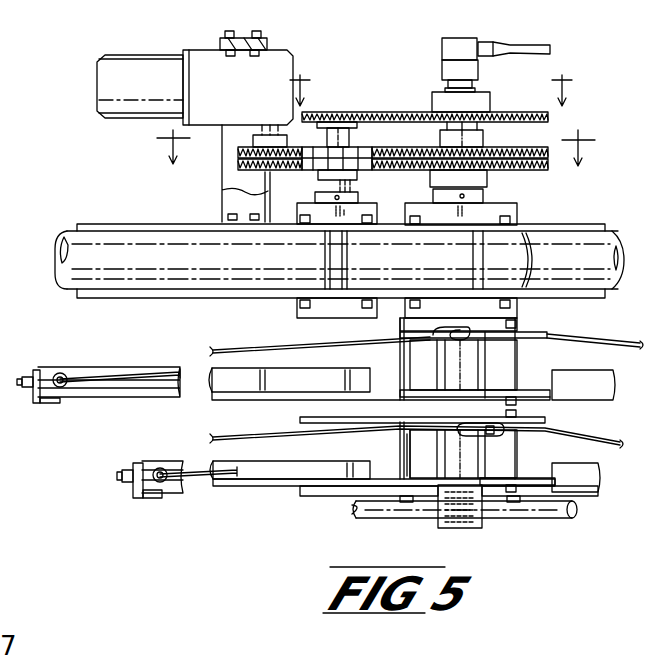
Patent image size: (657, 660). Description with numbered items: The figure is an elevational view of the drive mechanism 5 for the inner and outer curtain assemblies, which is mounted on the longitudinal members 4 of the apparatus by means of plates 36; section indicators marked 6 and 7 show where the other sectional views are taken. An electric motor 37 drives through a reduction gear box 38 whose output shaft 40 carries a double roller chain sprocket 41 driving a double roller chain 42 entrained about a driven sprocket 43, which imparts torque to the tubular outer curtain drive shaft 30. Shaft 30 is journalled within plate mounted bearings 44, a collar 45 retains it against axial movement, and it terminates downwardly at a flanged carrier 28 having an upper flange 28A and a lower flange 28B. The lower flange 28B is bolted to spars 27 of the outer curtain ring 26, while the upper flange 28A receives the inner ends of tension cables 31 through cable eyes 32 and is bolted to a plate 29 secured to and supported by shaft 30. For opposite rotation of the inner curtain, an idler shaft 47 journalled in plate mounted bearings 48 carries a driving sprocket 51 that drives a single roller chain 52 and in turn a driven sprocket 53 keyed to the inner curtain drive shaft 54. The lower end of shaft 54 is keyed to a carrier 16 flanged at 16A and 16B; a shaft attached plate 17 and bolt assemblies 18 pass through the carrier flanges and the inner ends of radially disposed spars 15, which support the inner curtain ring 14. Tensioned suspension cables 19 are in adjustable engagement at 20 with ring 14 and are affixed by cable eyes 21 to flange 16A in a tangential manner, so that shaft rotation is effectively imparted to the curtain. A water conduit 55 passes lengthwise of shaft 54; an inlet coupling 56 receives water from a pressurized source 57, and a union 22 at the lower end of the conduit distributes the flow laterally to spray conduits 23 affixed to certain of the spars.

The longitudinal members 4 is at (70, 269).
The drive mechanism 5 is at (373, 66).
The section line 6- 6 is at (431, 80).
The section line 7- 7 is at (374, 143).
The curtain ring 14 is at (145, 498).
The spars 15 is at (195, 490).
The carrier 16 is at (458, 451).
The carrier flange 16A is at (545, 422).
The carrier flange 16B is at (540, 480).
The shaft attached plate 17 is at (388, 411).
The bolt assemblies 18 is at (404, 442).
The tensioned suspension cables 19 is at (213, 438).
The adjustable engagement 20 is at (125, 470).
The cable eyes 21 is at (466, 426).
The union 22 is at (480, 528).
The spray conduits 23 is at (352, 510).
The curtain ring 26 is at (33, 396).
The spars 27 is at (165, 388).
The flanged carrier 28 is at (475, 361).
The upper flange 28A is at (595, 329).
The lower flange 28B is at (583, 385).
The plate 29 is at (535, 332).
The tubular outer curtain drive shaft 30 is at (484, 140).
The tension cables 31 is at (213, 350).
The cable eyes 32 is at (450, 327).
The plates 36 is at (164, 228).
The electric motor 37 is at (140, 86).
The reduction gear box 38 is at (238, 78).
The output shaft 40 is at (273, 127).
The double roller chain sprocket 41 is at (241, 176).
The double roller chain 42 is at (240, 163).
The driven sprocket 43 is at (488, 180).
The plate mounted bearings 44 is at (517, 211).
The collar 45 is at (432, 196).
The shaft 47 is at (358, 133).
The plate mounted bearings 48 is at (305, 233).
The driving sprocket 51 is at (318, 172).
The single roller chain 52 is at (380, 112).
The driven sprocket 53 is at (410, 111).
The inner curtain drive shaft 54 is at (482, 92).
The water conduit 55 is at (470, 82).
The inlet coupling 56 is at (460, 45).
The pressurized source 57 is at (525, 48).